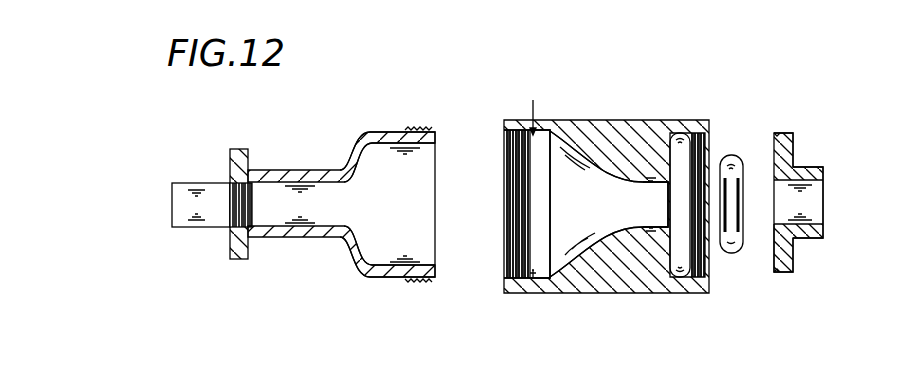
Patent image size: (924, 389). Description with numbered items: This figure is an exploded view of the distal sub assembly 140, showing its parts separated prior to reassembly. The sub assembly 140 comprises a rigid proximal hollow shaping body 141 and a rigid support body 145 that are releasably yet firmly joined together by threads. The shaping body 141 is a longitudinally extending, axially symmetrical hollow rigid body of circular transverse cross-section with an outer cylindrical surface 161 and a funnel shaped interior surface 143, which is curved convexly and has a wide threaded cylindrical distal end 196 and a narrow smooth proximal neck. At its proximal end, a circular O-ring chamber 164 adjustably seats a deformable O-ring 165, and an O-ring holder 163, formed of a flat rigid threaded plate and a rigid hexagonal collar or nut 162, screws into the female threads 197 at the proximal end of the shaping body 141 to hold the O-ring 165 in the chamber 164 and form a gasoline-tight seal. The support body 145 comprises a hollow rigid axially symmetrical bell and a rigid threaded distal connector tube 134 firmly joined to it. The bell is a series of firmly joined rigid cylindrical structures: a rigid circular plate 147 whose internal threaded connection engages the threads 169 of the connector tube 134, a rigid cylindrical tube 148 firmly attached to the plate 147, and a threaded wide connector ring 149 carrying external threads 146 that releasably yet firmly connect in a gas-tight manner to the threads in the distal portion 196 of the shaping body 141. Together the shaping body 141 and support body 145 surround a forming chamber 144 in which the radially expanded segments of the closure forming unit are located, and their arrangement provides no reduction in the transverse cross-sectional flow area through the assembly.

The distal sub assembly 140 is at (172, 348).
The support body 145 is at (418, 296).
The distal connector tube 134 is at (201, 216).
The circular plate 147 is at (242, 256).
The threads 169 is at (249, 175).
The cylindrical tube 148 is at (312, 236).
The connector ring 149 is at (358, 260).
The external proximal threads 146 is at (422, 277).
The shaping body 141 is at (645, 283).
The outer cylindrical surface 161 is at (565, 295).
The threaded cylindrical distal end 196 is at (533, 102).
The forming chamber 144 is at (585, 228).
The funnel shaped interior surface 143 is at (599, 168).
The O-ring chamber 164 is at (681, 286).
The female threads 197 is at (712, 158).
The O-ring 165 is at (726, 254).
The O-ring holder 163 is at (826, 114).
The hexagonal collar 162 is at (823, 169).